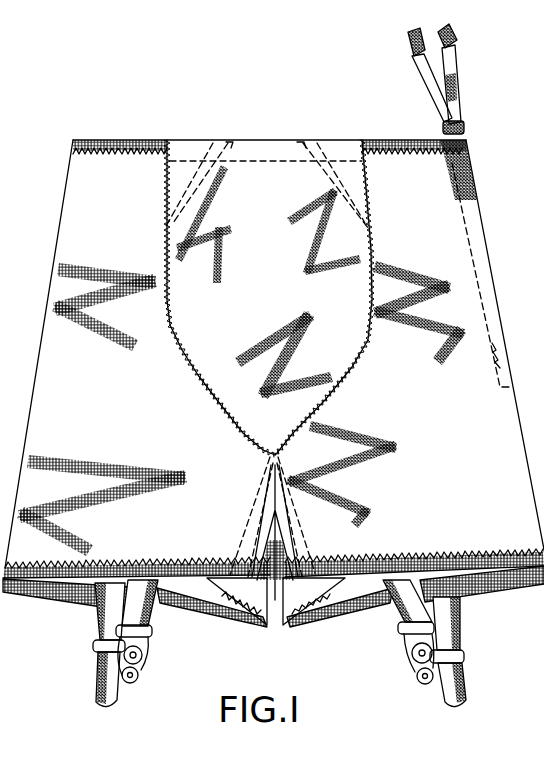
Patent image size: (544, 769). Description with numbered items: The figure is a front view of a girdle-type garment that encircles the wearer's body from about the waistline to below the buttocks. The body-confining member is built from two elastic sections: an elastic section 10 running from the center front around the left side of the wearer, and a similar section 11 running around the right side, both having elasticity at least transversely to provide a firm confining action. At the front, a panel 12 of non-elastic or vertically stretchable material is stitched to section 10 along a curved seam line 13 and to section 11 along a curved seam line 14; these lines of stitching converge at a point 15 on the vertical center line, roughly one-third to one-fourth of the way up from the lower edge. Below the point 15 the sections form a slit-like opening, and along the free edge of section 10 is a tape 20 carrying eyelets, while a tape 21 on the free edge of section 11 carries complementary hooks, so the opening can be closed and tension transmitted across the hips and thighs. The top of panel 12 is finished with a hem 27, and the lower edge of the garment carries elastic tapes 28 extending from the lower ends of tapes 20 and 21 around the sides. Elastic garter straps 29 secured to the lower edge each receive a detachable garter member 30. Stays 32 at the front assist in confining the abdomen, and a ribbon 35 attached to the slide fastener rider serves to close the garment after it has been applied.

The elastic section 10 is at (471, 201).
The elastic section 11 is at (72, 187).
The front panel 12 is at (262, 170).
The curved seam line 13 is at (376, 242).
The curved seam line 14 is at (182, 352).
The convergence point 15 is at (275, 452).
The tape 20 is at (307, 518).
The tape 21 is at (250, 498).
The hem 27 is at (246, 165).
The elastic tapes 28 is at (186, 604).
The elastic garter straps 29 is at (421, 598).
The detachable garter member 30 is at (142, 683).
The stays 32 is at (193, 160).
The ribbon 35 is at (425, 62).